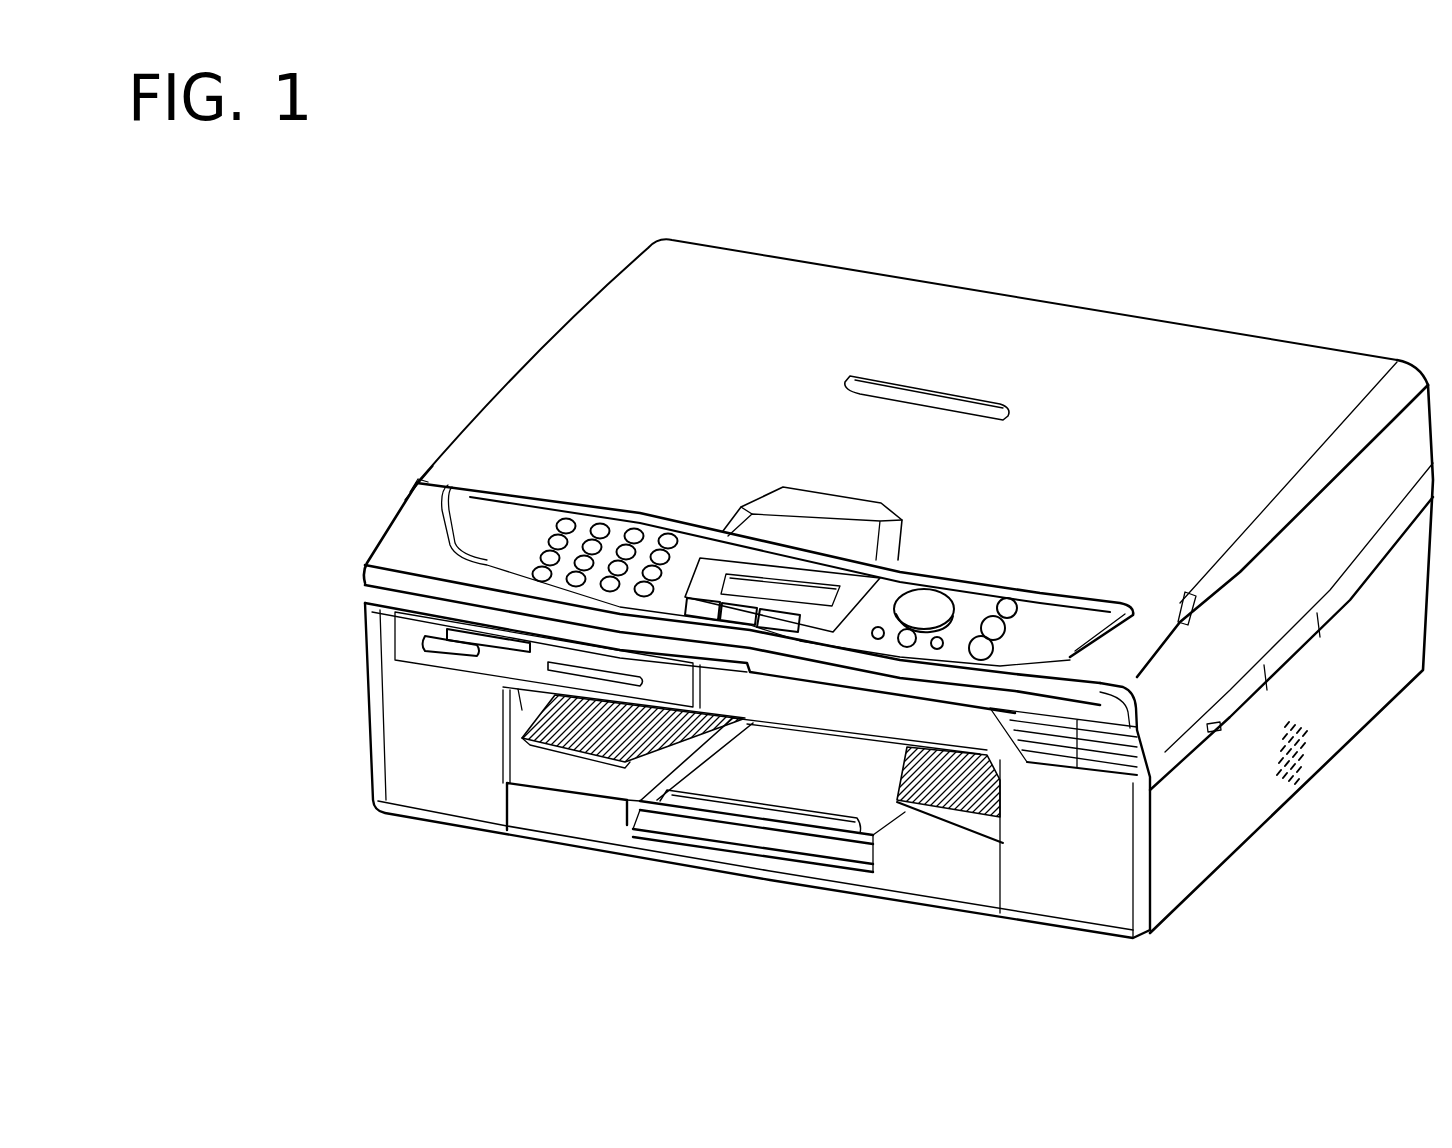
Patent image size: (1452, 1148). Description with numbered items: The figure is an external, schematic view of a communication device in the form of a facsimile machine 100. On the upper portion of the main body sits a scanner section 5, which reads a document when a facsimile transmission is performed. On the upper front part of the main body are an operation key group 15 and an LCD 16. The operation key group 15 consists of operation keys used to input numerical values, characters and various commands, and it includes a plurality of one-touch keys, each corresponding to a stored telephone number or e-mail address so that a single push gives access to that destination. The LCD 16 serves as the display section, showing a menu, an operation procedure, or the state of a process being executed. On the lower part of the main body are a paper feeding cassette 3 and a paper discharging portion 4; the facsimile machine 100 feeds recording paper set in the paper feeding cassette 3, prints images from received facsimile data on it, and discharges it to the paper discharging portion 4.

The facsimile machine 100 is at (1074, 294).
The scanner section 5 is at (767, 296).
The operation key group 15 is at (696, 515).
The LCD 16 is at (787, 590).
The paper discharging portion 4 is at (582, 748).
The paper feeding cassette 3 is at (608, 806).